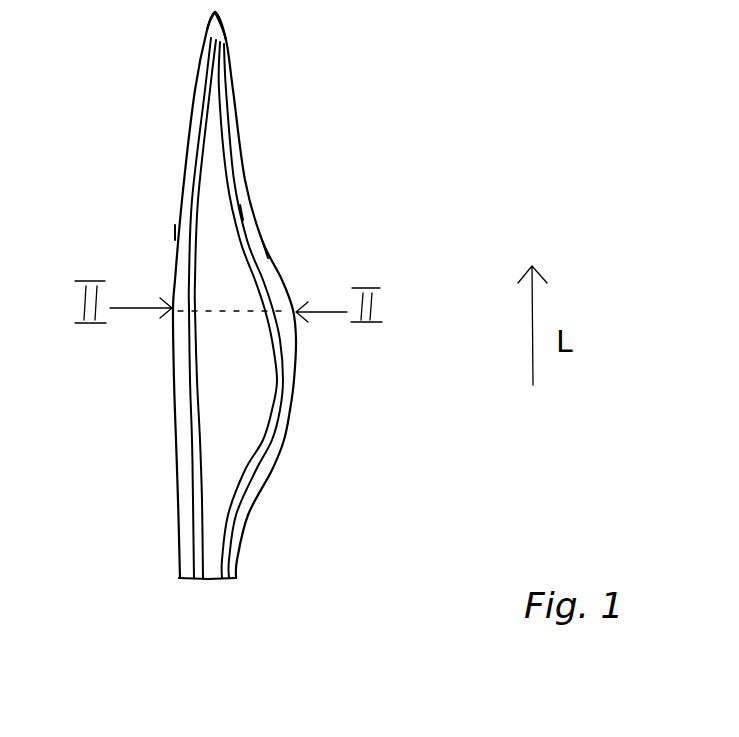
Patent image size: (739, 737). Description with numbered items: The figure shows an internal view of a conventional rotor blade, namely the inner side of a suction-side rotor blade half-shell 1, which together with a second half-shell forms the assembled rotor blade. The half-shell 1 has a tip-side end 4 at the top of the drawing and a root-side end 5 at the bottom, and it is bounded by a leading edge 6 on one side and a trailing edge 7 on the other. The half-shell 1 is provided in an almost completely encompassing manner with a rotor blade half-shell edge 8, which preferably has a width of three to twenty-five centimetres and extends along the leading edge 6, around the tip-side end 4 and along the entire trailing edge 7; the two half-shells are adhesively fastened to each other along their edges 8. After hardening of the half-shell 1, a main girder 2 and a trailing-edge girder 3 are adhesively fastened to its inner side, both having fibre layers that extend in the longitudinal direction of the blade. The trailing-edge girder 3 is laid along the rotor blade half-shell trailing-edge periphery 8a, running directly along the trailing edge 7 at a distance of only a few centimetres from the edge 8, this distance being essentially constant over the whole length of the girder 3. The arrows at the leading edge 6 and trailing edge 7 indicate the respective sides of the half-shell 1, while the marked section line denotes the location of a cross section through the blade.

The suction-side rotor blade half-shell 1 is at (215, 182).
The main girder 2 is at (197, 437).
The trailing-edge girder 3 is at (266, 433).
The tip-side end 4 is at (172, 27).
The root-side end 5 is at (212, 590).
The leading edge 6 is at (142, 361).
The trailing edge 7 is at (341, 361).
The rotor blade half-shell edge 8 is at (247, 216).
The rotor blade half-shell trailing-edge periphery 8a is at (268, 256).